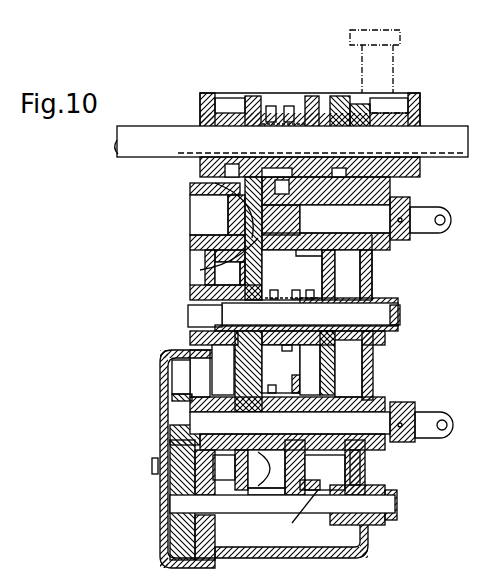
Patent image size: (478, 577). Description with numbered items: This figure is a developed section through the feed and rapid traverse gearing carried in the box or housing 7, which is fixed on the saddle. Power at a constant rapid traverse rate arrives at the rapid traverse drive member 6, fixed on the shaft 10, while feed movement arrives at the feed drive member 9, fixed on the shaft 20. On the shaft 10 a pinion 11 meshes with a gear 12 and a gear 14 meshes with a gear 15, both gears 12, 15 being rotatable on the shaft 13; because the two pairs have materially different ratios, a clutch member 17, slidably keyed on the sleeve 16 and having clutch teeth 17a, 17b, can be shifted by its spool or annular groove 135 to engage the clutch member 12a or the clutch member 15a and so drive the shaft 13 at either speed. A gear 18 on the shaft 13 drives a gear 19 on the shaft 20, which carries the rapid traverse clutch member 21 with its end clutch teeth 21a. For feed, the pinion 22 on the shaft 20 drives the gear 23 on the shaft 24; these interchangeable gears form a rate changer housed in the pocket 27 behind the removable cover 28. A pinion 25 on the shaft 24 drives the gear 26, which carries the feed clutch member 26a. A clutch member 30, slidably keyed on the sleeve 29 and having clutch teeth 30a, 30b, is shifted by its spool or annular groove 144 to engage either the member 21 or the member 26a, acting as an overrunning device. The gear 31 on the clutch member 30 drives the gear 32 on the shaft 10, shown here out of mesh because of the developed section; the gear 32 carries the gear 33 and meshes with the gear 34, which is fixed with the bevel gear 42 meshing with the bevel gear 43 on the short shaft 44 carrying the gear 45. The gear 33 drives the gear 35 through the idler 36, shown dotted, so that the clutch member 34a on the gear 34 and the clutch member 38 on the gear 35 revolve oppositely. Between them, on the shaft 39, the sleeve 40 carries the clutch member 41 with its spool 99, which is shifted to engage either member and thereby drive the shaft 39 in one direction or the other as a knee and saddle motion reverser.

The rapid traverse drive member 6 is at (406, 239).
The box or housing 7 is at (373, 372).
The feed drive member 9 is at (405, 404).
The shaft 10 is at (190, 217).
The pinion 11 is at (205, 258).
The gear 12 is at (215, 271).
The clutch member 12a is at (213, 284).
The shaft 13 is at (190, 318).
The gear 14 is at (341, 274).
The gear 15 is at (355, 267).
The clutch member 15a is at (349, 294).
The sleeve 16 is at (281, 369).
The clutch member 17 is at (292, 285).
The clutch teeth 17a is at (279, 285).
The clutch teeth 17b is at (314, 285).
The gear 18 is at (205, 345).
The gear 19 is at (223, 370).
The shaft 20 is at (266, 469).
The rapid traverse clutch member 21 is at (230, 470).
The end clutch teeth 21a is at (266, 492).
The pinion 22 is at (172, 396).
The gear 23 is at (172, 548).
The shaft 24 is at (172, 505).
The pinion 25 is at (335, 526).
The gear 26 is at (366, 477).
The feed clutch member 26a is at (366, 462).
The pocket 27 is at (172, 375).
The cover 28 is at (170, 425).
The sleeve 29 is at (292, 467).
The clutch member 30 is at (325, 476).
The clutch teeth 30a is at (276, 384).
The clutch teeth 30b is at (317, 363).
The gear 31 is at (301, 507).
The gear 32 is at (309, 257).
The gear 33 is at (292, 274).
The gear 34 is at (332, 98).
The clutch member 34a is at (314, 104).
The gear 35 is at (245, 100).
The idler 36 is at (204, 176).
The clutch member 38 is at (260, 104).
The shaft 39 is at (170, 127).
The sleeve 40 is at (295, 157).
The clutch member 41 is at (270, 106).
The bevel gear 42 is at (352, 104).
The bevel gear 43 is at (400, 108).
The short shaft 44 is at (391, 84).
The gear 45 is at (402, 38).
The spool 99 is at (290, 106).
The spool or annular groove 135 is at (294, 353).
The spool or annular groove 144 is at (291, 376).